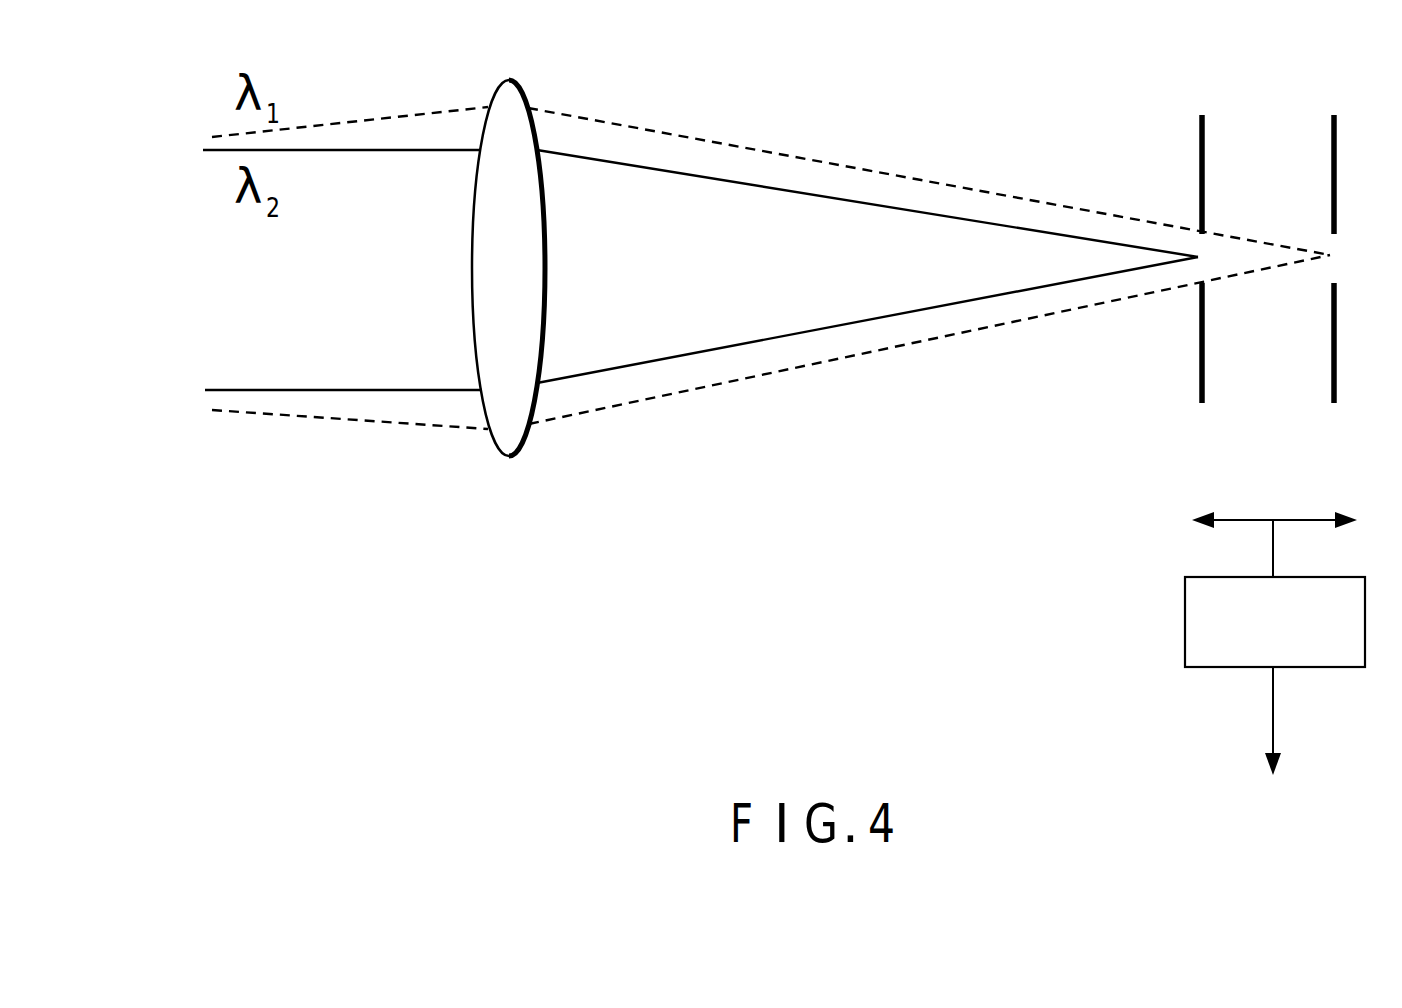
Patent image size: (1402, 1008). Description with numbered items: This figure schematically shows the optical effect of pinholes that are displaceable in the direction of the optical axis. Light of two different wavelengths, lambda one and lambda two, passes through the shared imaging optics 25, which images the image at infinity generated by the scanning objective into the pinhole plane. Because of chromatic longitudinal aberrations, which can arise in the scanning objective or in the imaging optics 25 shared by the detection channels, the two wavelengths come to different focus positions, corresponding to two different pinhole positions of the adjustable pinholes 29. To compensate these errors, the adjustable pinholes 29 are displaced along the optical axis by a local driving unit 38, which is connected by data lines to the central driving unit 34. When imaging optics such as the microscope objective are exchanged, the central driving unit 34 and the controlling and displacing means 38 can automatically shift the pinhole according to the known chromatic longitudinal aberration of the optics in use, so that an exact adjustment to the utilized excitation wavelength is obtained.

The imaging optics 25 is at (527, 98).
The adjustable pinholes 29 is at (1330, 137).
The local driving unit 38 is at (1183, 603).
The central driving unit 34 is at (1273, 742).